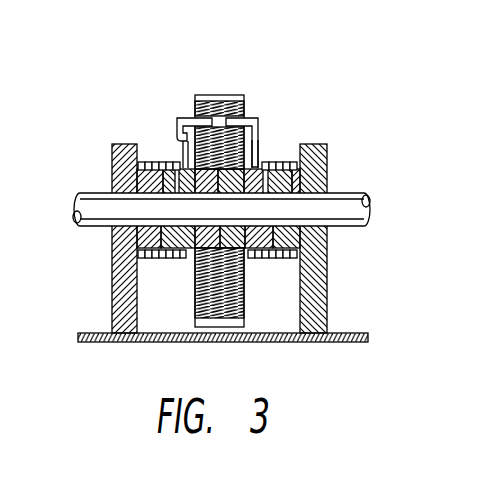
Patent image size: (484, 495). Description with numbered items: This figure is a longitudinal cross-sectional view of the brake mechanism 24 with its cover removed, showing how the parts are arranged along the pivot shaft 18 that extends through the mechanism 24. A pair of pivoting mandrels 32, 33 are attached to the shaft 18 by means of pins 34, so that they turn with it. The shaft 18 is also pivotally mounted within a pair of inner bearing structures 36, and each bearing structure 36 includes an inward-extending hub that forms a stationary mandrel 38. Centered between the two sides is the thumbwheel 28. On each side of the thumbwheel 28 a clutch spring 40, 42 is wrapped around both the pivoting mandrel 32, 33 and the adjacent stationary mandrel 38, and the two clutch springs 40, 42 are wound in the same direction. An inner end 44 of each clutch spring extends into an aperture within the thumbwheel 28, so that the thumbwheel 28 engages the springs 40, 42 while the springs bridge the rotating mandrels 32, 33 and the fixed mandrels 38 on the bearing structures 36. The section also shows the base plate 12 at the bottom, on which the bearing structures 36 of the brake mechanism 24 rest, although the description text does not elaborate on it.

The base plate 12 is at (347, 333).
The pivot shaft 18 is at (345, 193).
The brake mechanism 24 is at (327, 100).
The thumbwheel 28 is at (215, 93).
The pivoting mandrel 32 is at (184, 259).
The pivoting mandrel 33 is at (250, 259).
The pin 34 is at (179, 134).
The inner bearing structure 36 is at (328, 258).
The stationary mandrel 38 is at (136, 145).
The clutch spring 40 is at (148, 161).
The clutch spring 42 is at (290, 161).
The inner end 44 is at (184, 152).